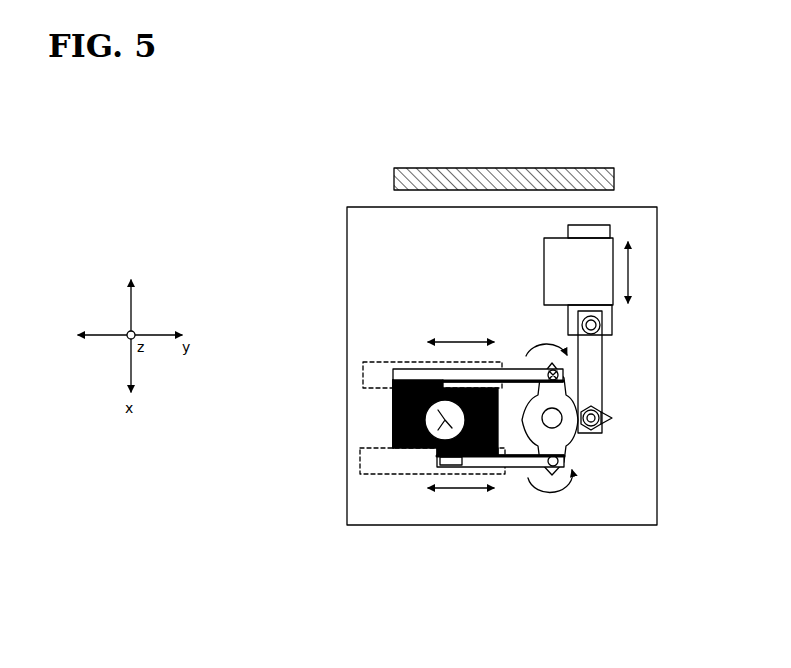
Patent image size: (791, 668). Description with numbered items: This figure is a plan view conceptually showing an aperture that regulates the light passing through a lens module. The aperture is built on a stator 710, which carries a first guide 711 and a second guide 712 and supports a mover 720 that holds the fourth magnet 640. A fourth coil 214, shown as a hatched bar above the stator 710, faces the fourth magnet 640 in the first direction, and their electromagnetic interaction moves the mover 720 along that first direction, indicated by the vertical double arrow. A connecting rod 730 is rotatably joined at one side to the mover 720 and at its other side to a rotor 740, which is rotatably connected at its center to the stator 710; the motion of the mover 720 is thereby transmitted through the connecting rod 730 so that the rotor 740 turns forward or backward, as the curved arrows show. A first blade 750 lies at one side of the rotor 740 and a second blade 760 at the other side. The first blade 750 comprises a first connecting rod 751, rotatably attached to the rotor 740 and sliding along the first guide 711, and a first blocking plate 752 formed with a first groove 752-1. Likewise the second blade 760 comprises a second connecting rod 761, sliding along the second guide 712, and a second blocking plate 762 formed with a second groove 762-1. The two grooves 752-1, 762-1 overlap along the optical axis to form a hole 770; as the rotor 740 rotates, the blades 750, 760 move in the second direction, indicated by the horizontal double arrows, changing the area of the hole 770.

The fourth coil 214 is at (575, 172).
The fourth magnet 640 is at (595, 270).
The stator 710 is at (636, 385).
The first guide 711 is at (367, 388).
The second guide 712 is at (378, 462).
The mover 720 is at (602, 228).
The connecting rod 730 is at (597, 350).
The rotor 740 is at (565, 433).
The first blade 750 is at (556, 583).
The first connecting rod 751 is at (508, 463).
The first blocking plate 752 is at (478, 462).
The first groove 752-1 is at (455, 462).
The second blade 760 is at (312, 276).
The upper slider rail 761 is at (442, 373).
The second blocking plate 762 is at (393, 380).
The second groove 762-1 is at (392, 388).
The hole 770 is at (428, 447).